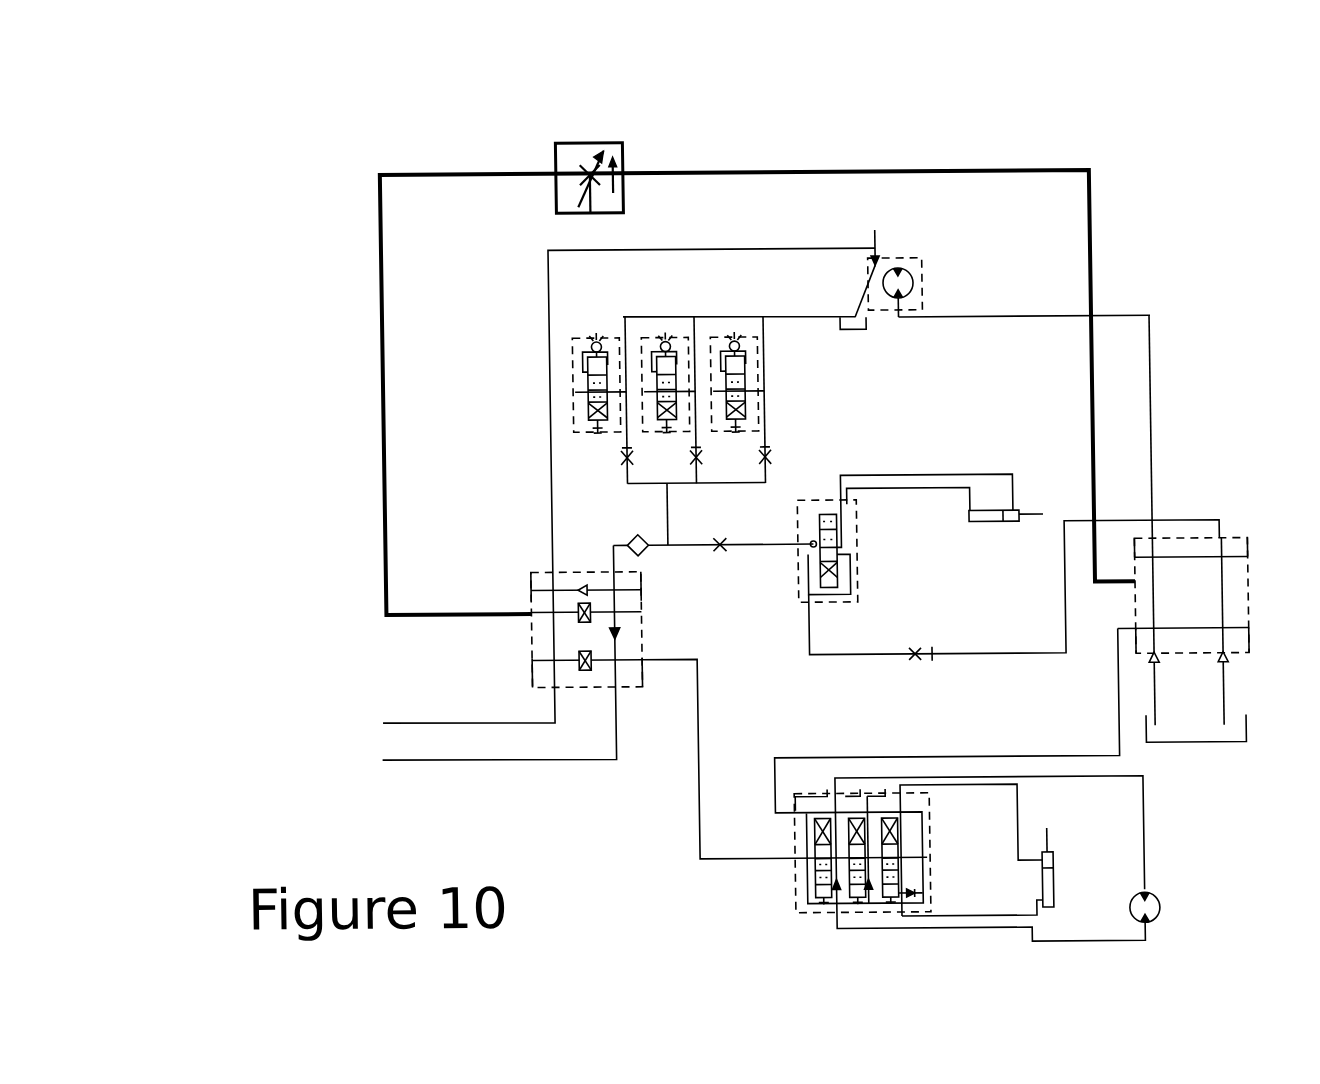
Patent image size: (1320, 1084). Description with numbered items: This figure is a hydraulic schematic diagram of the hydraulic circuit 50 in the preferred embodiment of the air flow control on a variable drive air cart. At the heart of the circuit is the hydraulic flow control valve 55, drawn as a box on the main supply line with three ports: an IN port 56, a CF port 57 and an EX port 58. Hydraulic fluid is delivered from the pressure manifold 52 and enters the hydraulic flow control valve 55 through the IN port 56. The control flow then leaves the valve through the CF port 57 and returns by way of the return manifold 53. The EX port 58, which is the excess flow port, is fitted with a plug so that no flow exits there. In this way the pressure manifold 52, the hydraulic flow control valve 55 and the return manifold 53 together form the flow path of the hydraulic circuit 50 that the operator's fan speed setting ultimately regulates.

The hydraulic circuit 50 is at (345, 298).
The pressure manifold 52 is at (510, 645).
The return manifold 53 is at (1210, 498).
The hydraulic flow control valve 55 is at (560, 205).
The IN port 56 is at (560, 172).
The CF port 57 is at (625, 172).
The EX port 58 is at (597, 210).